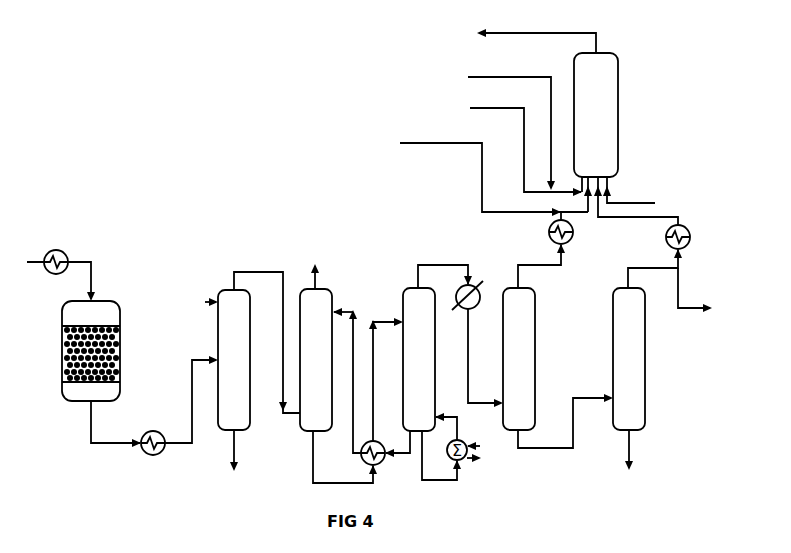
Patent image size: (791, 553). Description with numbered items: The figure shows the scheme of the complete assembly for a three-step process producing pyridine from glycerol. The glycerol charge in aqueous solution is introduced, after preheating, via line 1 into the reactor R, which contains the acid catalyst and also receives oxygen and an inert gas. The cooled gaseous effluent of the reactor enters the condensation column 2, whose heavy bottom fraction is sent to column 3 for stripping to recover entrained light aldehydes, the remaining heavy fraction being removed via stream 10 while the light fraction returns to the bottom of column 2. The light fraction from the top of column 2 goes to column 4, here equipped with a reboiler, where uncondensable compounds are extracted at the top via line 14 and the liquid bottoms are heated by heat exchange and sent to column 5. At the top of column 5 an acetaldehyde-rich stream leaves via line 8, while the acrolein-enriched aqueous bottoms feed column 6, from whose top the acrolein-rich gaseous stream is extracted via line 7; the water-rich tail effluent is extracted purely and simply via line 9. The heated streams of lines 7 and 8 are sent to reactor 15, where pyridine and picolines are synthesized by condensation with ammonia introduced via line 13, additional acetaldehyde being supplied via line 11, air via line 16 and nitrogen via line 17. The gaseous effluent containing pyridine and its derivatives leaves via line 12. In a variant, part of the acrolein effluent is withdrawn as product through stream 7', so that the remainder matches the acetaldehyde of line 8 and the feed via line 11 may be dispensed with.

The reactor R is at (73, 351).
The line 1 is at (67, 275).
The condensation column 2 is at (234, 360).
The column 3 is at (316, 360).
The column 4 is at (419, 359).
The column 5 is at (519, 359).
The column 6 is at (629, 359).
The line 7 is at (659, 256).
The stream 7' is at (695, 303).
The line 8 is at (542, 250).
The line 9 is at (629, 464).
The stream 10 is at (234, 465).
The line 11 is at (479, 177).
The line 12 is at (516, 39).
The line 13 is at (641, 190).
The line 14 is at (320, 263).
The reactor 15 is at (596, 115).
The line 16 is at (510, 149).
The line 17 is at (496, 131).